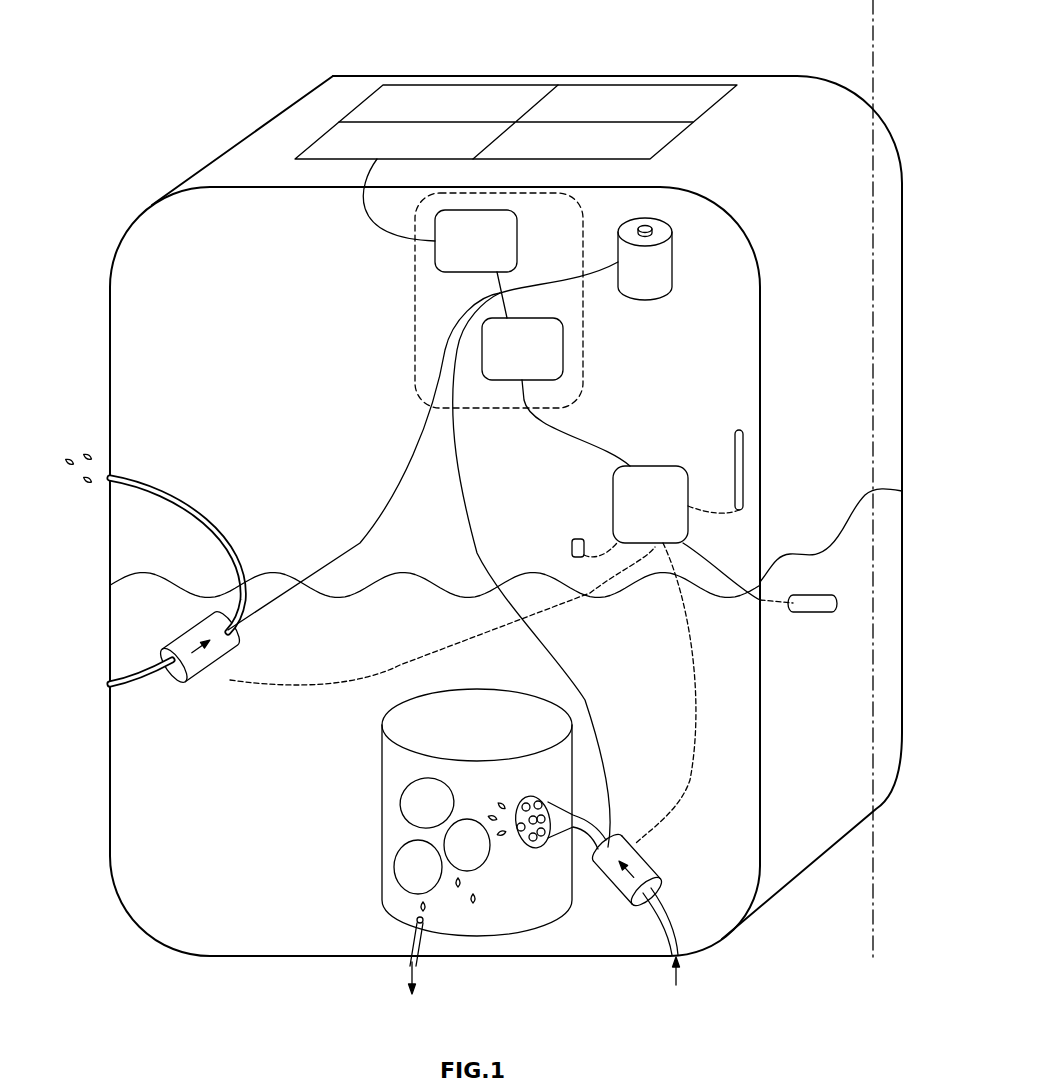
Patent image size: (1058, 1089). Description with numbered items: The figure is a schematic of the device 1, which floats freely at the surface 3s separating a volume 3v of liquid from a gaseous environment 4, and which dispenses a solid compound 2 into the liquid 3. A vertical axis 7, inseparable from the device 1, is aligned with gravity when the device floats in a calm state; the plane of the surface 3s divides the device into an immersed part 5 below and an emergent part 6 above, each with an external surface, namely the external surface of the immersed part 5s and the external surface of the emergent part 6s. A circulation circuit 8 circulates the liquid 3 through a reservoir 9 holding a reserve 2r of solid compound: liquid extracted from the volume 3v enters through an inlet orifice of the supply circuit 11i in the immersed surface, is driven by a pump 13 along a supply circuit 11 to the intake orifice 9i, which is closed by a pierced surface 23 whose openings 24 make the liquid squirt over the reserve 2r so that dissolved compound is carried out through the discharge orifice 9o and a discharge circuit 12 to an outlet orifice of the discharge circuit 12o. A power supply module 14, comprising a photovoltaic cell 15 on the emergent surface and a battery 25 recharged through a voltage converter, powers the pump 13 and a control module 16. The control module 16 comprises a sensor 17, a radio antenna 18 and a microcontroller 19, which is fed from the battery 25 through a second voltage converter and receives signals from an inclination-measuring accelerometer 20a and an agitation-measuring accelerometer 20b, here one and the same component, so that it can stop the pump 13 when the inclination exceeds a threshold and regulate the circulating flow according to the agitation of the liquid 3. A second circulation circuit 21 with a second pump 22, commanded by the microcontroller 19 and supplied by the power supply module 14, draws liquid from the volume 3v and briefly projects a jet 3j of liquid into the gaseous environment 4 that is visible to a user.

The device 1 is at (165, 114).
The gaseous environment 4 is at (56, 303).
The external surface of the emergent part 6s is at (851, 301).
The external surface of the immersed part 5s is at (851, 769).
The emergent part 6 is at (902, 315).
The immersed part 5 is at (902, 645).
The vertical axis 7 is at (873, 900).
The photovoltaic cell 15 is at (713, 108).
The power supply module 14 is at (318, 248).
The battery 25 is at (672, 252).
The second pump 22 is at (235, 648).
The second circulation circuit 21 is at (266, 522).
The jet of liquid 3j is at (88, 450).
The volume of liquid 3v is at (86, 810).
The surface 3s is at (837, 543).
The control module 16 is at (585, 476).
The microcontroller 19 is at (655, 466).
The inclination-measuring accelerometer 20a is at (576, 539).
The agitation-measuring accelerometer 20b is at (600, 550).
The radio antenna 18 is at (743, 455).
The sensor 17 is at (812, 613).
The circulation circuit 8 is at (637, 729).
The reservoir 9 is at (382, 751).
The solid compound 2 is at (473, 857).
The reserve of solid compound 2r is at (394, 826).
The liquid 3 is at (505, 802).
The opening 24 is at (536, 797).
The pierced surface 23 is at (527, 846).
The intake orifice 9i is at (537, 844).
The discharge orifice 9o is at (426, 920).
The discharge circuit 12 is at (408, 936).
The outlet orifice of the discharge circuit 12o is at (409, 960).
The pump 13 is at (637, 848).
The supply circuit 11 is at (701, 870).
The inlet orifice of the supply circuit 11i is at (681, 961).